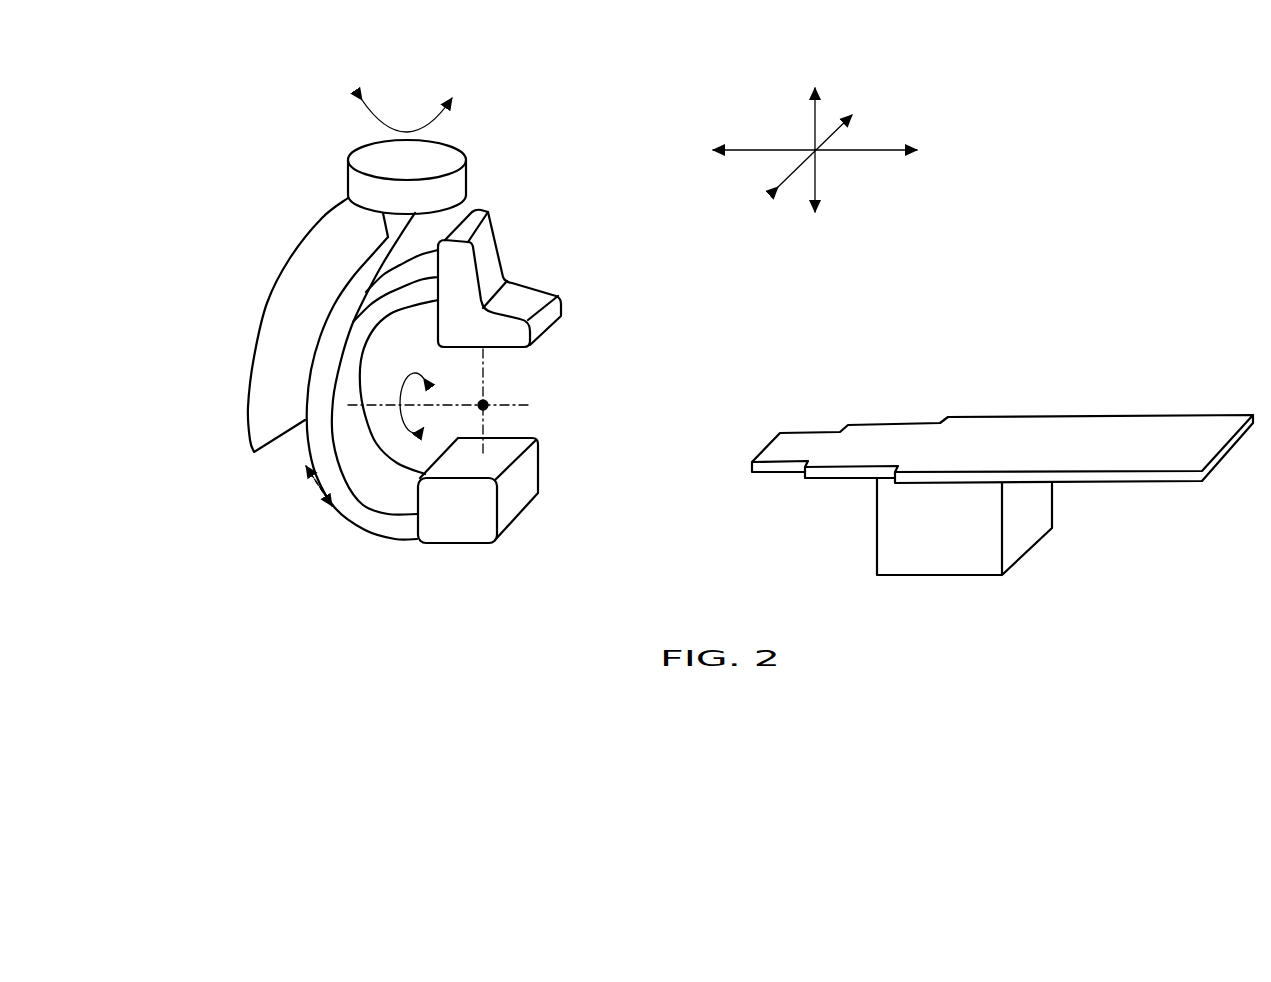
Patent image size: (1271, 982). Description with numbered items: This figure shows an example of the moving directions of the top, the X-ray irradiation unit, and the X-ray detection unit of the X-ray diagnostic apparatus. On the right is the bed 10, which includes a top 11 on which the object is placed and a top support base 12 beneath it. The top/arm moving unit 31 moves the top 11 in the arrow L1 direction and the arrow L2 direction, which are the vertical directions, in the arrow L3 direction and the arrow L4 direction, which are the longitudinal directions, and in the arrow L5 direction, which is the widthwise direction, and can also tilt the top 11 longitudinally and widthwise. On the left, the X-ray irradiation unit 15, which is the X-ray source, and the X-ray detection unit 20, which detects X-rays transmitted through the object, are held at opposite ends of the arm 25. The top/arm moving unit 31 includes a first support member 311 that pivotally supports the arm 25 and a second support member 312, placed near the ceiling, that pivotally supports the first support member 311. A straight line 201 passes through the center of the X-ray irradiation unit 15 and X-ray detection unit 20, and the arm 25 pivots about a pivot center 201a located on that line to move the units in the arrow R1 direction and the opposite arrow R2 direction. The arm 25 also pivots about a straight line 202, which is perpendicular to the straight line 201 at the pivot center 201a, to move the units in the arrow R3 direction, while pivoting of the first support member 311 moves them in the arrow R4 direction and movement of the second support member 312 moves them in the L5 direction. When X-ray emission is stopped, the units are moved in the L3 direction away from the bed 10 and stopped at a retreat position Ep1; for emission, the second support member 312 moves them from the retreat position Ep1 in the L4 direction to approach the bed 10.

The bed 10 is at (1106, 488).
The top 11 is at (1055, 475).
The top support base 12 is at (1023, 527).
The X-ray irradiation unit 15 is at (518, 441).
The X-ray detection unit 20 is at (532, 300).
The arm 25 is at (367, 345).
The top/arm moving unit 31 is at (238, 148).
The first support member 311 is at (345, 200).
The second support member 312 is at (348, 177).
The straight line 201 is at (483, 447).
The pivot center 201a is at (480, 403).
The straight line 202 is at (432, 362).
The retreat position Ep1 is at (512, 246).
The arrow R1 direction R1 is at (314, 499).
The arrow R2 direction R2 is at (303, 486).
The arrow R3 direction R3 is at (398, 403).
The arrow R4 direction R4 is at (423, 115).
The arrow L1 direction L1 is at (811, 103).
The arrow L2 direction L2 is at (832, 188).
The arrow L3 direction L3 is at (763, 135).
The arrow L4 direction L4 is at (867, 135).
The arrow L5 direction L5 is at (821, 137).